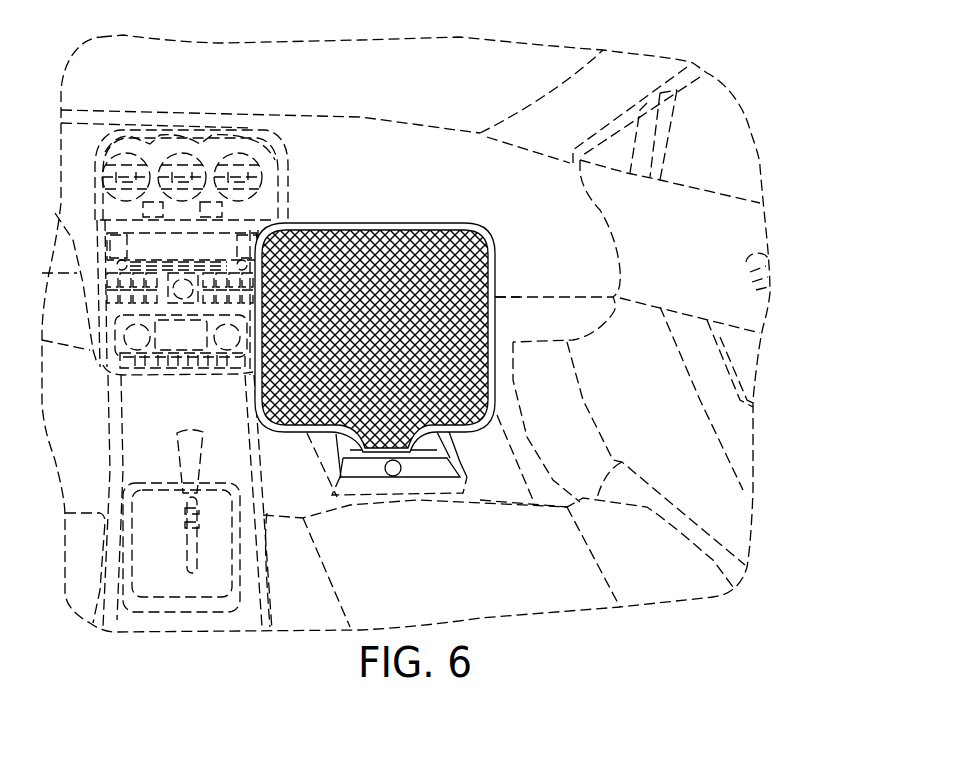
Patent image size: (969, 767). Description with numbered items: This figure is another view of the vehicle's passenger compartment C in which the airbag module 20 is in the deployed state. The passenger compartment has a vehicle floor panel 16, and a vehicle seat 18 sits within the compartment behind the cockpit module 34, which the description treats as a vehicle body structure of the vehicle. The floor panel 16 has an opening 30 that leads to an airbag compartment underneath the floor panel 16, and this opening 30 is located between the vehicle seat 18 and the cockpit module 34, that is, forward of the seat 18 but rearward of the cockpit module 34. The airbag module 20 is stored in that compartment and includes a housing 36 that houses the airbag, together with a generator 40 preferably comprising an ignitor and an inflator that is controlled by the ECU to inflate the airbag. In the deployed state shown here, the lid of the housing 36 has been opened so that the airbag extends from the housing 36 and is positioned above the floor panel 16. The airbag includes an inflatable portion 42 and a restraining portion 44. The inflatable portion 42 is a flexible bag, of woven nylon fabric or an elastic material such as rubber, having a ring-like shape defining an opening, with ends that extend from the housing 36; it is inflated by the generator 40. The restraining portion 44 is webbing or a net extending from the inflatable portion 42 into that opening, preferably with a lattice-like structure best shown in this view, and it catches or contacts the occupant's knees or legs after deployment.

The vehicle cabin C is at (485, 92).
The cockpit module 34 is at (345, 182).
The vehicle floor panel 16 is at (542, 411).
The vehicle seat 18 is at (623, 460).
The airbag module 20 is at (502, 279).
The opening 30 is at (457, 462).
The housing 36 is at (421, 486).
The generator 40 is at (384, 467).
The inflatable portion 42 is at (397, 223).
The restraining portion 44 is at (448, 253).